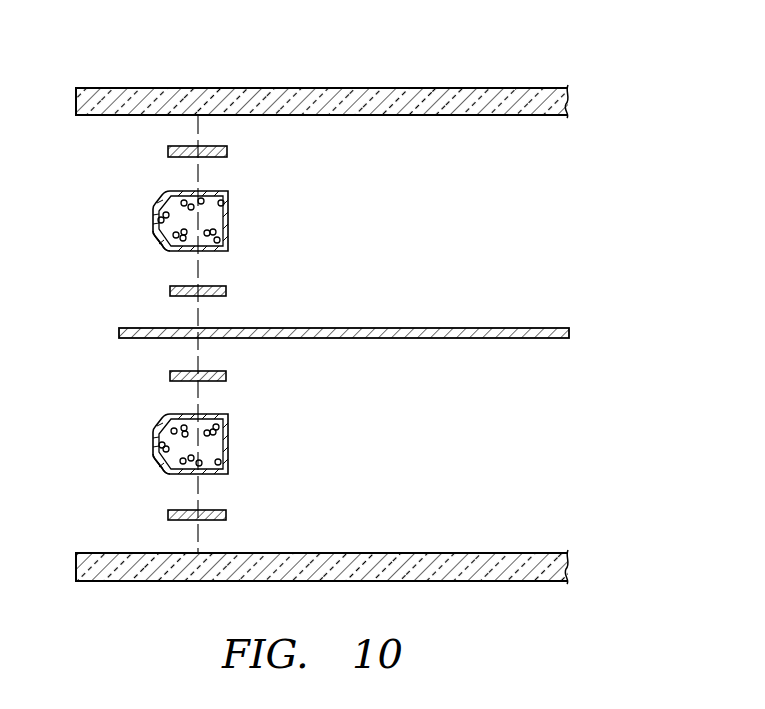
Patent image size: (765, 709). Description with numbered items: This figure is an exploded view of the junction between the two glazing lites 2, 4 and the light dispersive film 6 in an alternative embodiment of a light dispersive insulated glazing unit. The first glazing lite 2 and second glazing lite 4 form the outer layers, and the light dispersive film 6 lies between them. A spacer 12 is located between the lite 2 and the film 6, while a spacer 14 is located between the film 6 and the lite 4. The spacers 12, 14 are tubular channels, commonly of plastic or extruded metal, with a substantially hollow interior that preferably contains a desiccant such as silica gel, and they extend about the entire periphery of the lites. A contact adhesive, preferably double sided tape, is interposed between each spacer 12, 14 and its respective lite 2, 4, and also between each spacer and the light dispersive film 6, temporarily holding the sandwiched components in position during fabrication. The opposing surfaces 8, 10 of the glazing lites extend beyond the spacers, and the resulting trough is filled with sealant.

The glazing lite 2 is at (397, 88).
The glazing lite 4 is at (482, 581).
The light dispersive film 6 is at (495, 328).
The opposing surface 8 is at (510, 115).
The opposing surface 10 is at (410, 553).
The spacer 12 is at (152, 192).
The spacer 14 is at (152, 417).